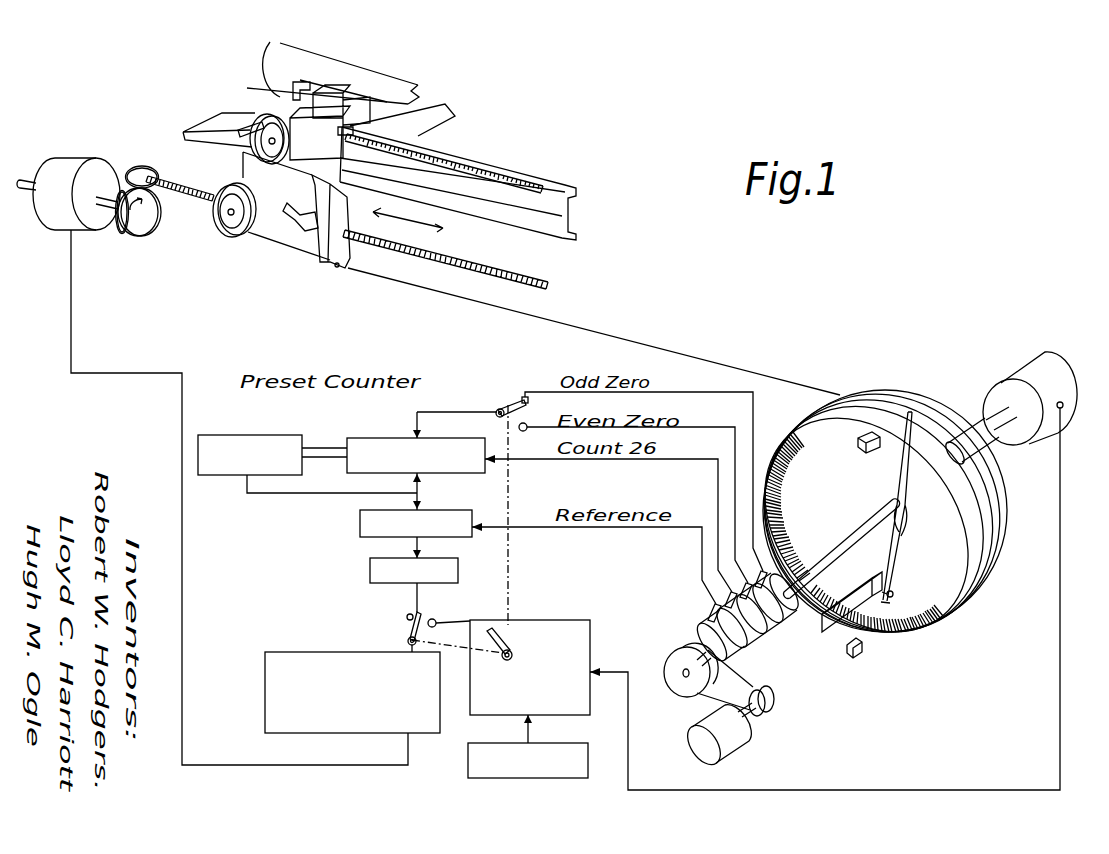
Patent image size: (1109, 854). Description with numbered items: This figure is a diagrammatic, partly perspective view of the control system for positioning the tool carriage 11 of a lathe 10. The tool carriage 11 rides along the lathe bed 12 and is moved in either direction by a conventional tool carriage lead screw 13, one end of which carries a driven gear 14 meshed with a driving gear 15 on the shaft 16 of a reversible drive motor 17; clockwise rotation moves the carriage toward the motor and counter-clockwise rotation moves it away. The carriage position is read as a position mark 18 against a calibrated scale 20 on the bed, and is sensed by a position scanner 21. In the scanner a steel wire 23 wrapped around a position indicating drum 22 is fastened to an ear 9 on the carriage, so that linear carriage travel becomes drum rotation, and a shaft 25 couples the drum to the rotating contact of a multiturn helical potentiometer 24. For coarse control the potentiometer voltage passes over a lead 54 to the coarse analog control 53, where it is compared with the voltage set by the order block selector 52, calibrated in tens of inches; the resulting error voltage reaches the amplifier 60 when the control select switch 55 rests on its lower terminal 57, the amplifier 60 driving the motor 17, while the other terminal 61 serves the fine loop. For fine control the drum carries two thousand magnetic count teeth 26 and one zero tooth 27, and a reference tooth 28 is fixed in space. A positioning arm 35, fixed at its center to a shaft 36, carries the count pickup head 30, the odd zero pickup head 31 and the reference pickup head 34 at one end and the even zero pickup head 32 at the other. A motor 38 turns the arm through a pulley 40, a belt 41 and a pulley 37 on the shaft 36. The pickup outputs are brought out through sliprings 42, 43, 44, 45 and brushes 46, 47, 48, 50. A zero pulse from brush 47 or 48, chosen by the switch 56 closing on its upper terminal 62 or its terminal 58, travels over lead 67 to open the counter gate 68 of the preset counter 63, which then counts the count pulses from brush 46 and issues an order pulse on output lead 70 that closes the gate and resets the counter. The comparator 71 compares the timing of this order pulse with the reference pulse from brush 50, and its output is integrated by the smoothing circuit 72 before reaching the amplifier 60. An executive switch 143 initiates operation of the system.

The ear 9 is at (340, 270).
The lathe 10 is at (553, 160).
The tool carriage 11 is at (295, 242).
The lathe bed 12 is at (563, 187).
The tool carriage lead screw 13 is at (537, 270).
The driven gear 14 is at (145, 167).
The driving gear 15 is at (149, 230).
The shaft 16 is at (113, 218).
The reversible drive motor 17 is at (78, 168).
The tool carriage position mark 18 is at (348, 138).
The calibrated scale 20 is at (463, 163).
The position scanner 21 is at (873, 369).
The position indicating drum 22 is at (998, 494).
The steel wire 23 is at (690, 355).
The multiturn helical potentiometer 24 is at (1018, 379).
The shaft 25 is at (983, 420).
The magnetic teeth 26 is at (805, 520).
The zero tooth 27 is at (905, 632).
The reference tooth 28 is at (861, 654).
The count pickup head 30 is at (893, 591).
The odd zero pickup head 31 is at (850, 580).
The even zero pickup head 32 is at (857, 443).
The reference pickup head 34 is at (823, 634).
The positioning arm 35 is at (900, 540).
The shaft 36 is at (852, 537).
The pulley 37 is at (668, 655).
The motor 38 is at (738, 752).
The pulley 40 is at (775, 701).
The belt 41 is at (760, 678).
The slipring 42 is at (762, 645).
The slipring 43 is at (786, 618).
The slipring 44 is at (780, 632).
The slipring 45 is at (740, 652).
The brush 46 is at (722, 593).
The brush 47 is at (762, 568).
The brush 48 is at (747, 575).
The brush 50 is at (710, 614).
The coarse order block selector 52 is at (508, 637).
The coarse analog control 53 is at (545, 620).
The lead 54 is at (1062, 597).
The control select switch 55 is at (406, 632).
The switch 56 is at (500, 408).
The lower terminal 57 is at (436, 620).
The terminal 58 is at (524, 431).
The amplifier 60 is at (283, 652).
The contact 61 is at (406, 616).
The upper terminal 62 is at (524, 397).
The preset counter 63 is at (340, 424).
The lead 67 is at (428, 410).
The counter gate 68 is at (370, 437).
The output lead 70 is at (337, 490).
The comparator 71 is at (466, 512).
The smoothing circuit 72 is at (460, 561).
The executive switch 143 is at (530, 778).